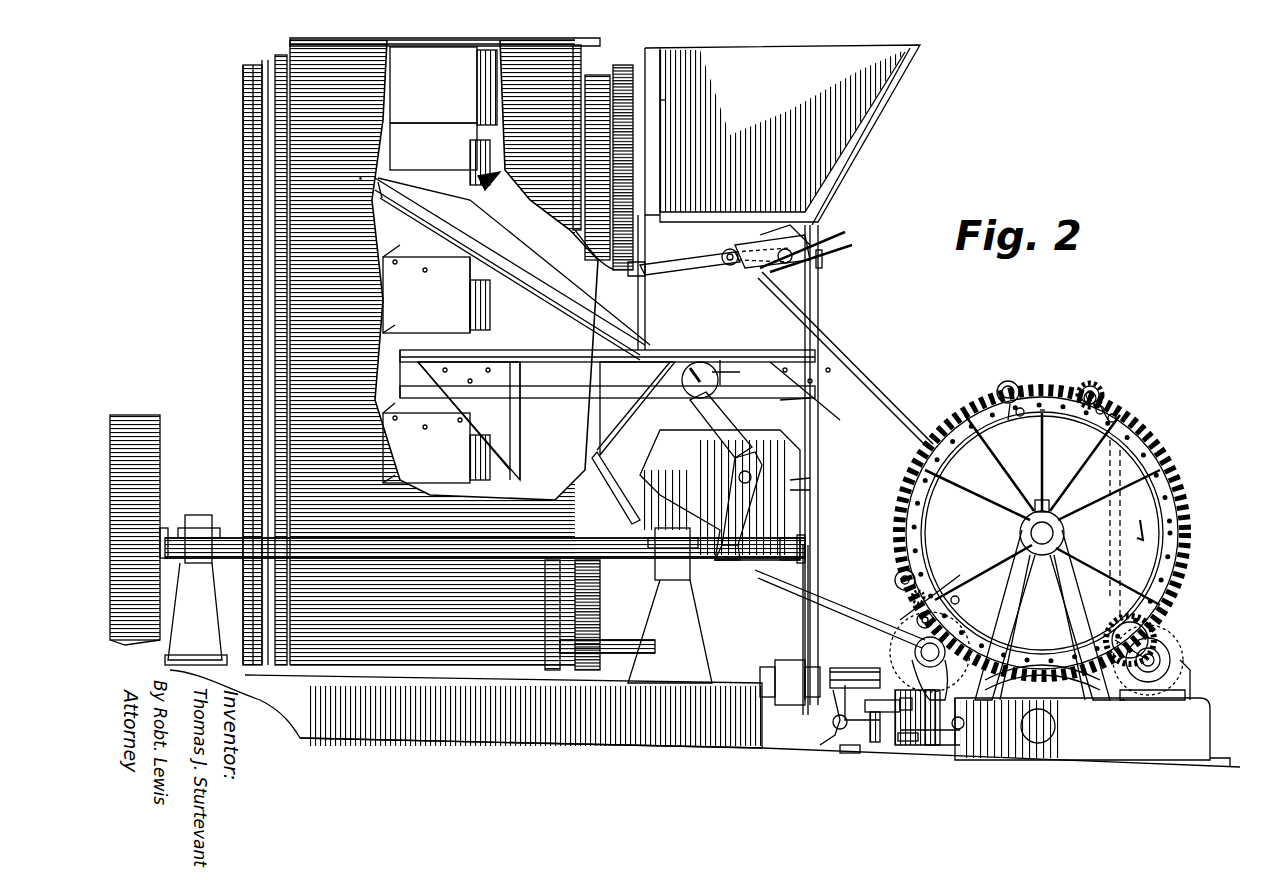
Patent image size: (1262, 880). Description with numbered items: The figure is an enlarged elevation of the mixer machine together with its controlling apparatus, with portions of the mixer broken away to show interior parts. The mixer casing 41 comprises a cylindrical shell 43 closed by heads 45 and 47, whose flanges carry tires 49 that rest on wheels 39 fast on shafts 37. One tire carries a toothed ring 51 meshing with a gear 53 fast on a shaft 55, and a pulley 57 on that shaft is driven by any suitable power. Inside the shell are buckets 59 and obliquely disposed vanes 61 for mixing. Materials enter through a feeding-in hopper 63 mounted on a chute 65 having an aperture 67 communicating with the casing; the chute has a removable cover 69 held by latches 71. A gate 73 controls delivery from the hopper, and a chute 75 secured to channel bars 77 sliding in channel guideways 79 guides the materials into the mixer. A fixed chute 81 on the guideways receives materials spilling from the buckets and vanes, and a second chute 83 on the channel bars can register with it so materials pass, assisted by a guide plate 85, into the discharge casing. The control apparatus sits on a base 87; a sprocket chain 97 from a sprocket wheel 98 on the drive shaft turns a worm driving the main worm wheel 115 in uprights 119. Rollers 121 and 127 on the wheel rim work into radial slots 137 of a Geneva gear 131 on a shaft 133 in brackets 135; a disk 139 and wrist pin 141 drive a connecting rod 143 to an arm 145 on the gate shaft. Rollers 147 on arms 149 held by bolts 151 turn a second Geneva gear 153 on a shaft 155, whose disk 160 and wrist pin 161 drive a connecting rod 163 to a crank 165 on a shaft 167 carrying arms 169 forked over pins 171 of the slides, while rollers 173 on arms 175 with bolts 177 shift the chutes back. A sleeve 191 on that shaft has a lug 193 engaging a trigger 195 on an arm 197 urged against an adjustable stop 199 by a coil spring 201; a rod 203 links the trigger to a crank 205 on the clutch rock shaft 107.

The shaft 37 is at (625, 638).
The wheel 39 is at (705, 718).
The casing 41 is at (245, 316).
The cylindrical shell 43 is at (275, 262).
The head 45 is at (290, 55).
The head 47 is at (580, 75).
The tire 49 is at (605, 80).
The toothed ring 51 is at (635, 160).
The gear 53 is at (630, 510).
The shaft 55 is at (225, 520).
The pulley 57 is at (158, 448).
The bucket 59 is at (432, 473).
The vane 61 is at (504, 265).
The feeding-in hopper 63 is at (840, 178).
The chute 65 is at (818, 413).
The aperture 67 is at (647, 316).
The cover 69 is at (820, 302).
The latch 71 is at (824, 260).
The gate 73 is at (668, 266).
The chute 75 is at (825, 246).
The channel bar 77 is at (732, 372).
The channel guideway 79 is at (775, 360).
The chute 81 is at (535, 250).
The chute 83 is at (500, 412).
The guide plate 85 is at (612, 465).
The base 87 is at (1205, 730).
The sprocket chain 97 is at (808, 632).
The sprocket wheel 98 is at (822, 540).
The rock shaft 107 is at (838, 740).
The worm wheel 115 is at (1183, 505).
The upright 119 is at (1020, 560).
The roller 121 is at (1160, 620).
The roller 127 is at (1112, 372).
The Geneva gear 131 is at (1160, 655).
The shaft 133 is at (1182, 670).
The bracket 135 is at (1190, 698).
The radial slot 137 is at (1165, 650).
The disk 139 is at (1170, 660).
The wrist pin 141 is at (1122, 530).
The connecting rod 143 is at (875, 395).
The arm 145 is at (820, 222).
The roller 147 is at (1010, 405).
The arm 149 is at (996, 392).
The bolt 151 is at (975, 405).
The Geneva gear 153 is at (915, 650).
The shaft 155 is at (912, 668).
The disk 160 is at (935, 622).
The wrist pin 161 is at (958, 730).
The connecting rod 163 is at (810, 590).
The crank 165 is at (740, 500).
The shaft 167 is at (752, 476).
The arm 169 is at (730, 420).
The pin 171 is at (698, 370).
The roller 173 is at (898, 584).
The arm 175 is at (930, 582).
The bolt 177 is at (944, 602).
The sleeve 191 is at (1185, 685).
The lug 193 is at (880, 690).
The trigger 195 is at (945, 708).
The arm 197 is at (920, 750).
The adjustable stop 199 is at (905, 736).
The coil spring 201 is at (880, 745).
The rod 203 is at (836, 668).
The crank 205 is at (832, 718).